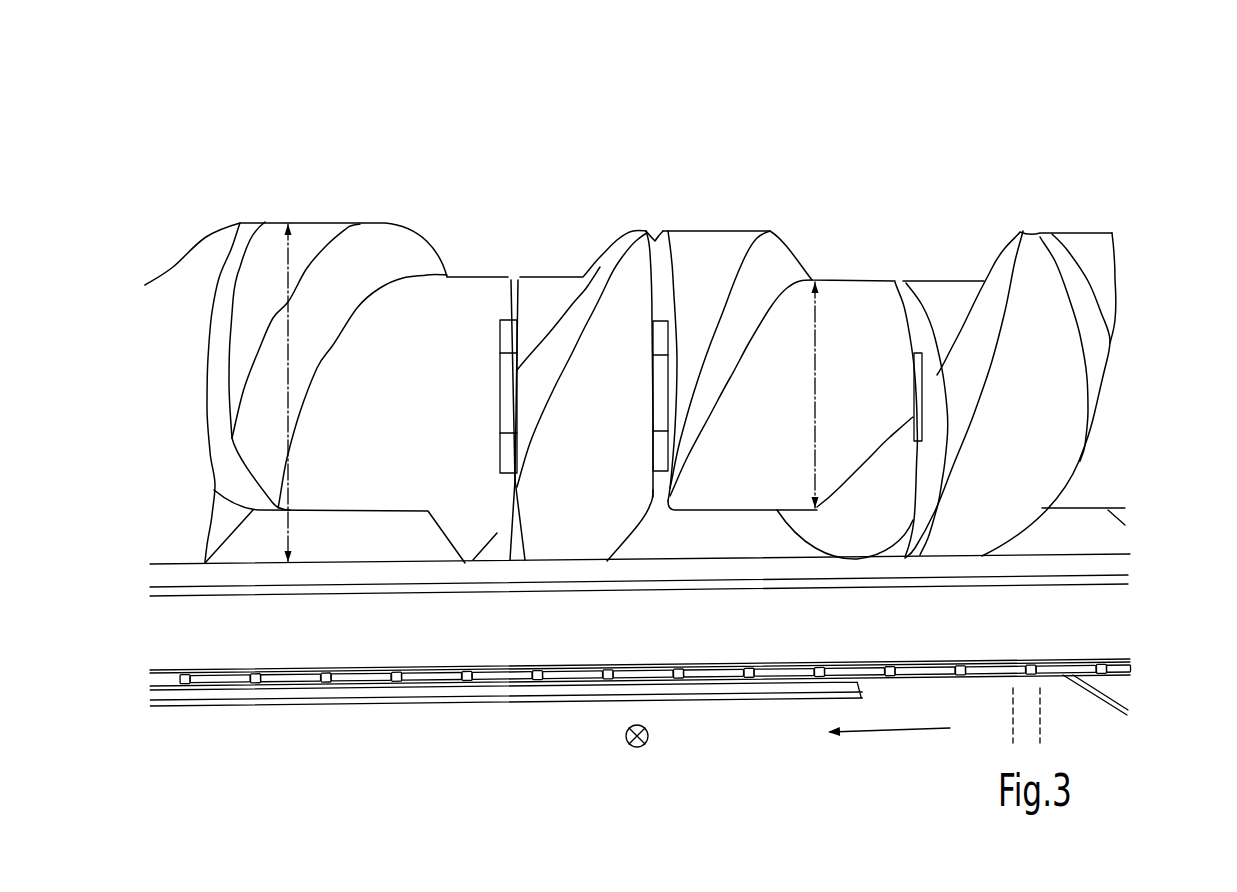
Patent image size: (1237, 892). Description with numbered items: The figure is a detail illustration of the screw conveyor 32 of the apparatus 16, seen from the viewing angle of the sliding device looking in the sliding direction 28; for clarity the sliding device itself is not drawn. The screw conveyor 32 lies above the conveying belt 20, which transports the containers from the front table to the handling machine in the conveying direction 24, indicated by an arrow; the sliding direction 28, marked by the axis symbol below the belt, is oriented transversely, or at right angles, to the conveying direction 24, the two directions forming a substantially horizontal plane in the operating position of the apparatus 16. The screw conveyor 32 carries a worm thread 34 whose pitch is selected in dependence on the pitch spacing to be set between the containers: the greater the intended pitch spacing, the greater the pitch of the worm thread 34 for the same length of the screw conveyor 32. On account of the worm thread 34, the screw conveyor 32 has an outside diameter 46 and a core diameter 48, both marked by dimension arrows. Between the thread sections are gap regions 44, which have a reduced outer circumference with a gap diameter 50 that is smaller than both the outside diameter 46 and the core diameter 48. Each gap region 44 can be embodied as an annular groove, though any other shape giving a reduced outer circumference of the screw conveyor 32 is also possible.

The apparatus 16 is at (312, 159).
The conveying belt 20 is at (530, 636).
The conveying direction 24 is at (883, 732).
The sliding direction 28 is at (626, 735).
The screw conveyor 32 is at (960, 235).
The worm thread 34 is at (1116, 226).
The gap region 44 is at (262, 220).
The outside diameter 46 is at (287, 357).
The core diameter 48 is at (816, 374).
The gap diameter 50 is at (455, 319).